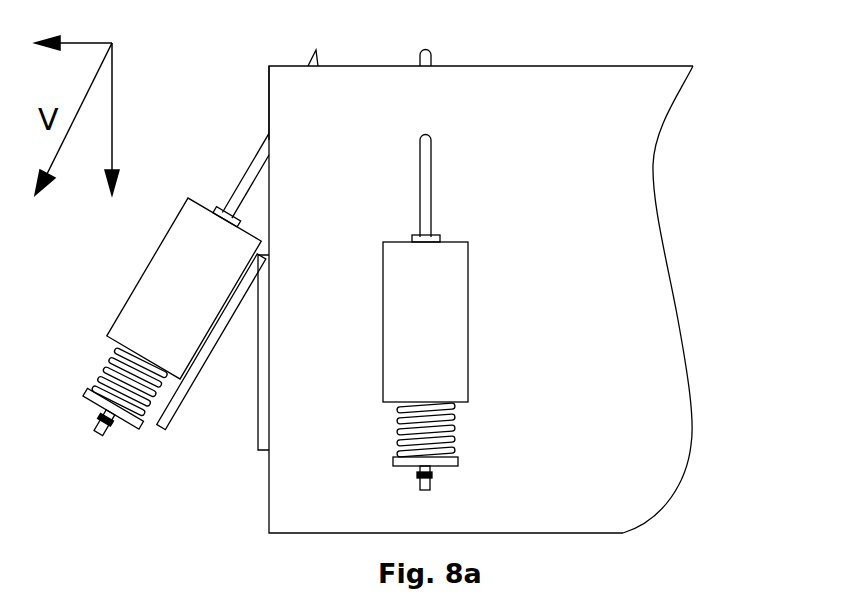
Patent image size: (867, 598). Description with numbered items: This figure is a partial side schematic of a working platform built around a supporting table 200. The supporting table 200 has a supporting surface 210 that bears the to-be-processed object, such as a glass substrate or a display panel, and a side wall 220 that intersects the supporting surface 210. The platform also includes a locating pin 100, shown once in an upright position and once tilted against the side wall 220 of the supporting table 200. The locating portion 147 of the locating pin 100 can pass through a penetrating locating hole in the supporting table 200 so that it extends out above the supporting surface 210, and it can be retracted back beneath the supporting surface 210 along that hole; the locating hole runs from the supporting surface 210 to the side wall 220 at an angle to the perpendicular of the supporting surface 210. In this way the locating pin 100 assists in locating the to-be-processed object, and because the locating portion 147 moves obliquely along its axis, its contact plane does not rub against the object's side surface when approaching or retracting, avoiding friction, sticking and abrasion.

The locating pin 100 is at (178, 283).
The locating portion 147 is at (430, 50).
The supporting table 200 is at (663, 412).
The supporting surface 210 is at (628, 66).
The side wall 220 is at (268, 108).